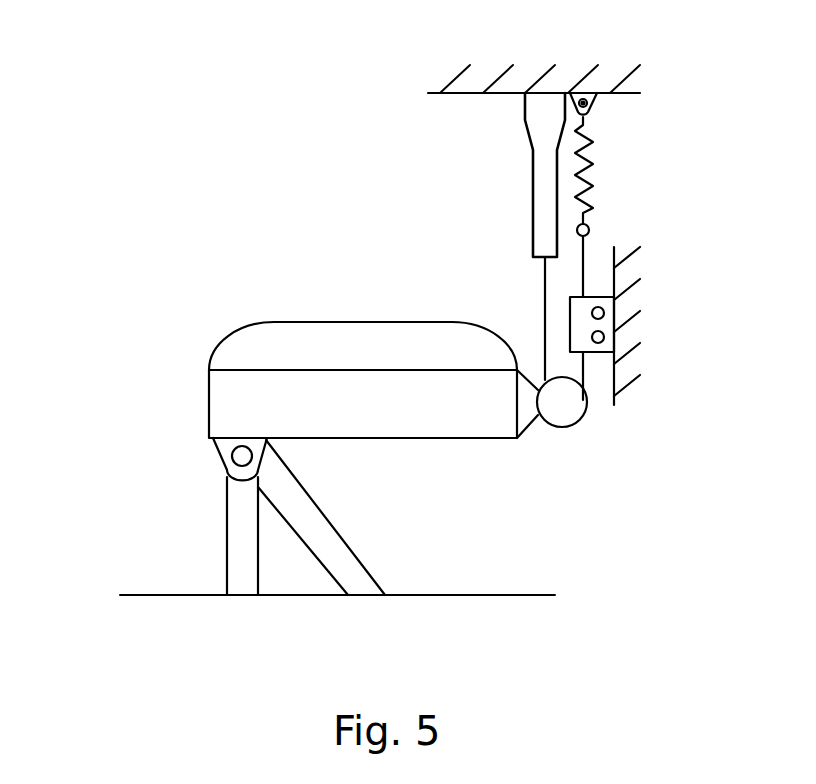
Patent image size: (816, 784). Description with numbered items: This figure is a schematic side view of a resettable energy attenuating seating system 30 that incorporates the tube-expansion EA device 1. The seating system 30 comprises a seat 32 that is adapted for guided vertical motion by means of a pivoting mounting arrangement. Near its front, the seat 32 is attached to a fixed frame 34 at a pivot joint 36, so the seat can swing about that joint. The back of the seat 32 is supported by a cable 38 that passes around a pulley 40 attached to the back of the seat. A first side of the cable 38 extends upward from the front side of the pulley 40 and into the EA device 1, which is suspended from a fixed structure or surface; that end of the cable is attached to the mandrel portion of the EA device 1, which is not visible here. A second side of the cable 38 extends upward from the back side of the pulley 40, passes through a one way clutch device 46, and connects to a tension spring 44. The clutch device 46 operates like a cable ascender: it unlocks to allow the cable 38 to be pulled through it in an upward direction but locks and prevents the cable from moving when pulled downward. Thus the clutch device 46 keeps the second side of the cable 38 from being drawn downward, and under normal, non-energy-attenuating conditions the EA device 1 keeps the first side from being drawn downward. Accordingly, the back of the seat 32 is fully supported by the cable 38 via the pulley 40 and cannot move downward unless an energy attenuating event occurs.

The resettable energy attenuating seating system 30 is at (190, 136).
The EA device 1 is at (533, 183).
The seat 32 is at (247, 328).
The fixed frame 34 is at (160, 533).
The pivot joint 36 is at (220, 458).
The cable 38 is at (545, 305).
The pulley 40 is at (567, 427).
The tension spring 44 is at (592, 165).
The one way clutch device 46 is at (606, 326).